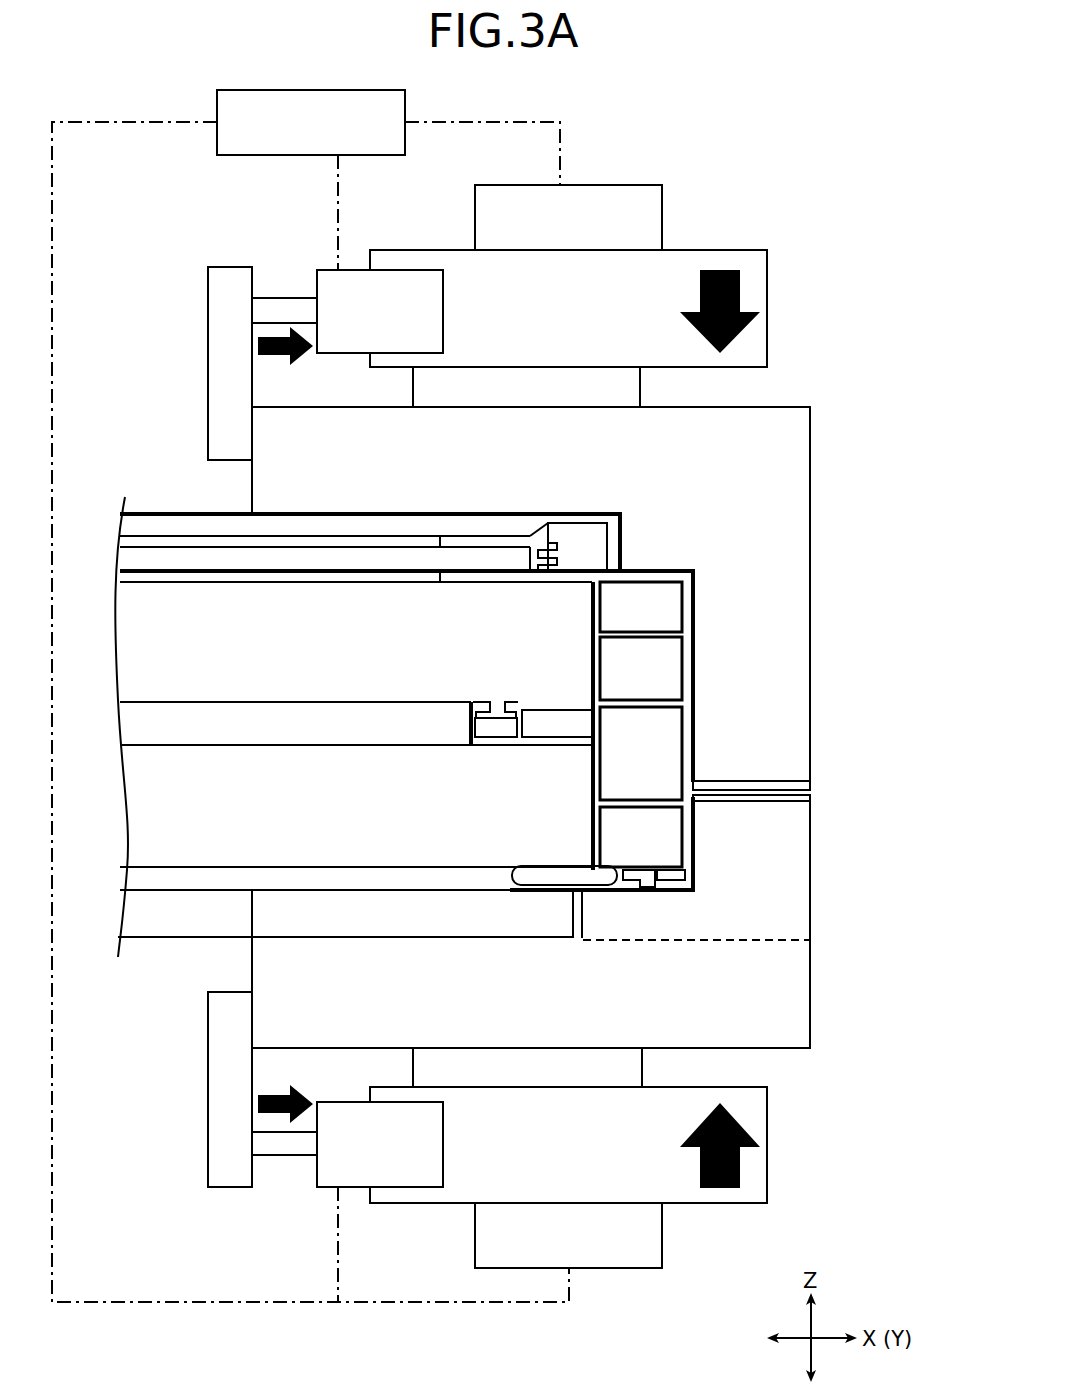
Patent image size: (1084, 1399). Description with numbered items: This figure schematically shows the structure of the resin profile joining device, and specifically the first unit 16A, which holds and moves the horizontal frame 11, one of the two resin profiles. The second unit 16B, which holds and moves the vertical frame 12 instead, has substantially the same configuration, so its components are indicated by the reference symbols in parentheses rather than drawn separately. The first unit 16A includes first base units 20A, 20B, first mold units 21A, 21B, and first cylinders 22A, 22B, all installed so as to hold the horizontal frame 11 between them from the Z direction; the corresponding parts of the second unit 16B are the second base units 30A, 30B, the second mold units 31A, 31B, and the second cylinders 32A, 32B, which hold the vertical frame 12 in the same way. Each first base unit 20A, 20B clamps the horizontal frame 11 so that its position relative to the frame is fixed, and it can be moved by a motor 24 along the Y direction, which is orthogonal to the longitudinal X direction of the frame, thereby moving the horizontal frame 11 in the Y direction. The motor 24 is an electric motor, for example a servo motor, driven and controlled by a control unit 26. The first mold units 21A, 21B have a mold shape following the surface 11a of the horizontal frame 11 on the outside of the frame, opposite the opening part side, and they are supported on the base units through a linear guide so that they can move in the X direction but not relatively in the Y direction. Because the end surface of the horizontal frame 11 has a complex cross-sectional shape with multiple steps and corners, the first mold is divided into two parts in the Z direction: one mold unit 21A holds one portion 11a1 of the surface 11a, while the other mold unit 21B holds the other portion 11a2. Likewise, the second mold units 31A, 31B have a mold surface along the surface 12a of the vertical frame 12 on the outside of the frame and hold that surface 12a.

The first unit 16A is at (310, 679).
The second unit 16B is at (163, 79).
The control unit 26 is at (352, 90).
The motor 24 is at (626, 163).
The first base unit 20A is at (596, 313).
The second base unit 30A is at (710, 251).
The first base unit 20B is at (641, 1125).
The second base unit 30B is at (767, 1100).
The first cylinder 22A is at (325, 339).
The second cylinder 32A is at (325, 270).
The first cylinder 22B is at (325, 1114).
The second cylinder 32B is at (318, 1188).
The first mold unit 21A is at (599, 594).
The second mold unit 31A is at (785, 478).
The first mold unit 21B is at (602, 922).
The second mold unit 31B is at (792, 1000).
The horizontal frame 11 is at (525, 727).
The vertical frame 12 is at (695, 735).
The surface 11a is at (767, 724).
The surface 12a is at (697, 673).
The one portion of the surface 11a1 is at (697, 628).
The other portion of the surface 11a2 is at (697, 850).